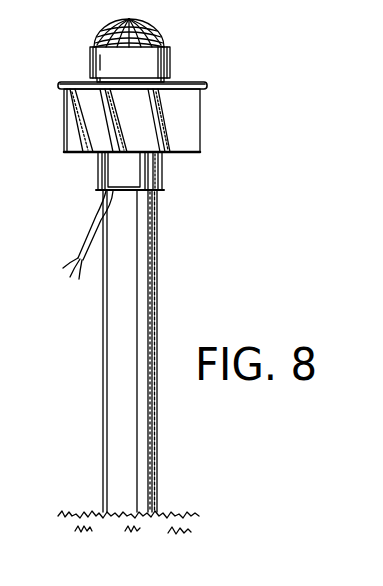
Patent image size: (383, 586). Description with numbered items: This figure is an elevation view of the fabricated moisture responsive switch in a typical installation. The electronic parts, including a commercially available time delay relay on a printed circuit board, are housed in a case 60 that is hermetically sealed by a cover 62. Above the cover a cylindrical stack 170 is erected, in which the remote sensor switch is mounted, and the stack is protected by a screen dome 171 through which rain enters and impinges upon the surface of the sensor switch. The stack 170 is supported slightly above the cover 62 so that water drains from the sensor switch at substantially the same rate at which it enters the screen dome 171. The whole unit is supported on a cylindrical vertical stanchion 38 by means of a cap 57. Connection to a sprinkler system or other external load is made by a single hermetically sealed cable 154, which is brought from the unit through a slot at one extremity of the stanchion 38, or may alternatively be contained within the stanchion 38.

The screen dome 171 is at (151, 25).
The cylindrical stack 170 is at (170, 61).
The cover 62 is at (203, 85).
The case 60 is at (200, 121).
The cap 57 is at (162, 181).
The cylindrical vertical stanchion 38 is at (158, 303).
The hermetically sealed cable 154 is at (99, 236).